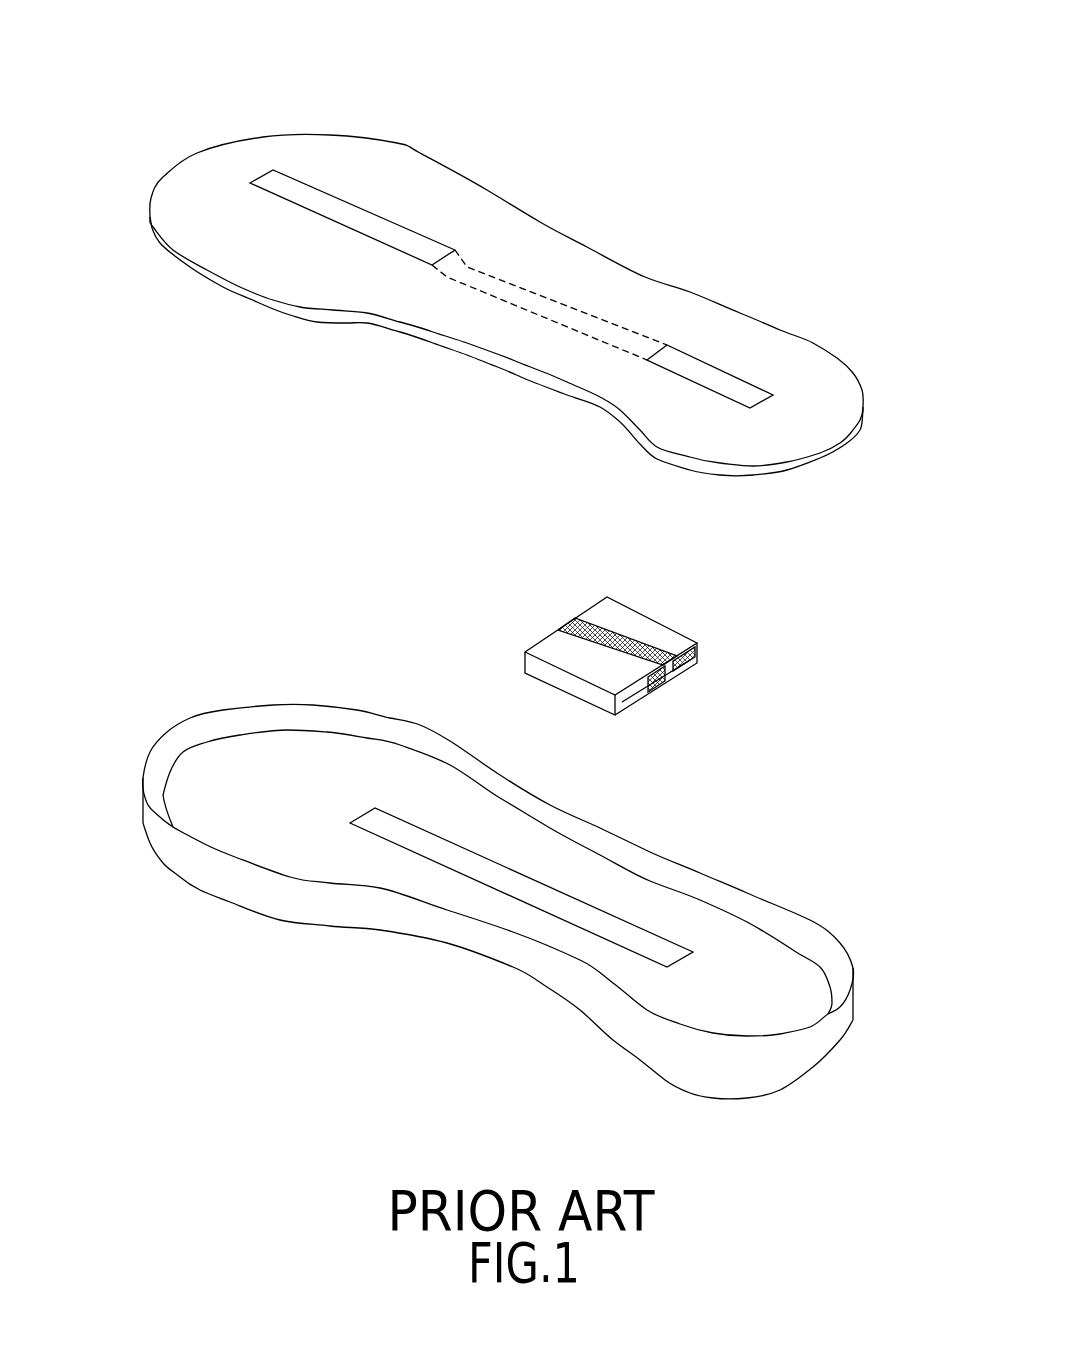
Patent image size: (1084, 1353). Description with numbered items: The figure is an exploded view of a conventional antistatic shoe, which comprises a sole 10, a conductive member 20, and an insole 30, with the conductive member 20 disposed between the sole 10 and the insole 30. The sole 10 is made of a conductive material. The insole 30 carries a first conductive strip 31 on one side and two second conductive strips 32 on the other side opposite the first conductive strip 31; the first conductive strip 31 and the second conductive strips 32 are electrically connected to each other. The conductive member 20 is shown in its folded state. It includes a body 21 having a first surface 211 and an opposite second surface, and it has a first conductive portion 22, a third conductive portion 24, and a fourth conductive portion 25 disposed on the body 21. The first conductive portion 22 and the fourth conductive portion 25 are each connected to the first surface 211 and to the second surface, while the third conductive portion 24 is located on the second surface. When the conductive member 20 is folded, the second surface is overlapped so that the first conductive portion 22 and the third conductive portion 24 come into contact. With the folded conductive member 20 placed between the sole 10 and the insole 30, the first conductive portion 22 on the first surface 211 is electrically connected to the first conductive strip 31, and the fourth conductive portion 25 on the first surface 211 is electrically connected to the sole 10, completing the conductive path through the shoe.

The sole 10 is at (191, 694).
The conductive member 20 is at (591, 643).
The body 21 is at (618, 621).
The first surface 211 is at (595, 615).
The first conductive portion 22 is at (607, 638).
The third conductive portion 24 is at (660, 688).
The fourth conductive portion 25 is at (692, 661).
The insole 30 is at (507, 247).
The first conductive strip 31 is at (535, 315).
The second conductive strips 32 is at (370, 225).